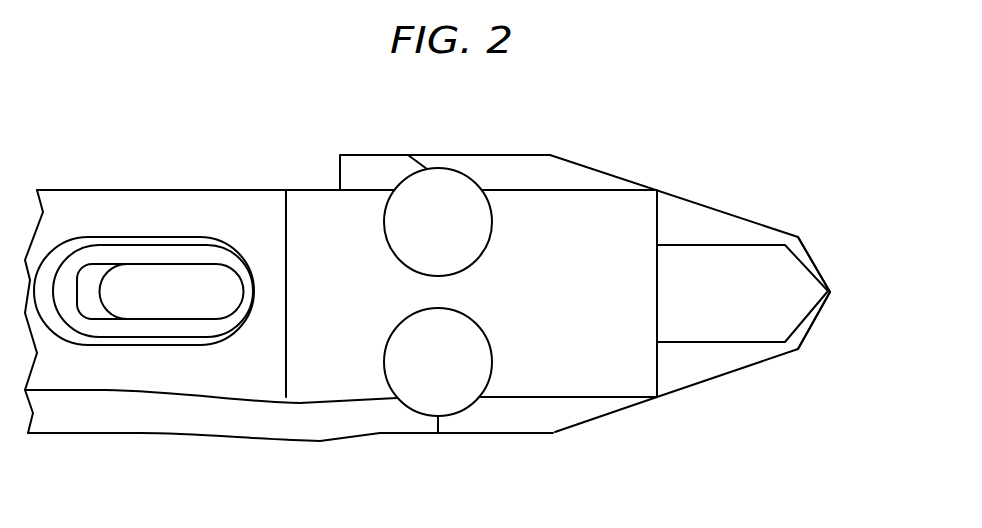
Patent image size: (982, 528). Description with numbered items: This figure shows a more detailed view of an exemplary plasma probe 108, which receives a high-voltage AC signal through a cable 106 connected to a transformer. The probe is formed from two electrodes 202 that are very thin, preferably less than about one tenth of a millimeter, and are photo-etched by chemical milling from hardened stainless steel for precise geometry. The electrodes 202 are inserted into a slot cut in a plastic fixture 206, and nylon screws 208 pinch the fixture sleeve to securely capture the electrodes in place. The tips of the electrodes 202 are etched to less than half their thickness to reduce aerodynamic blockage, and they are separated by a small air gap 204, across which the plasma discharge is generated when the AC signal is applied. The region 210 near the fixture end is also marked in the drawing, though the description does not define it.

The plasma probe 108 is at (623, 113).
The cable 106 is at (78, 432).
The fixture 206 is at (217, 372).
The screws 208 is at (437, 185).
The electrodes 202 is at (710, 228).
The inner nozzle section 210 is at (628, 368).
The air gap 204 is at (832, 292).